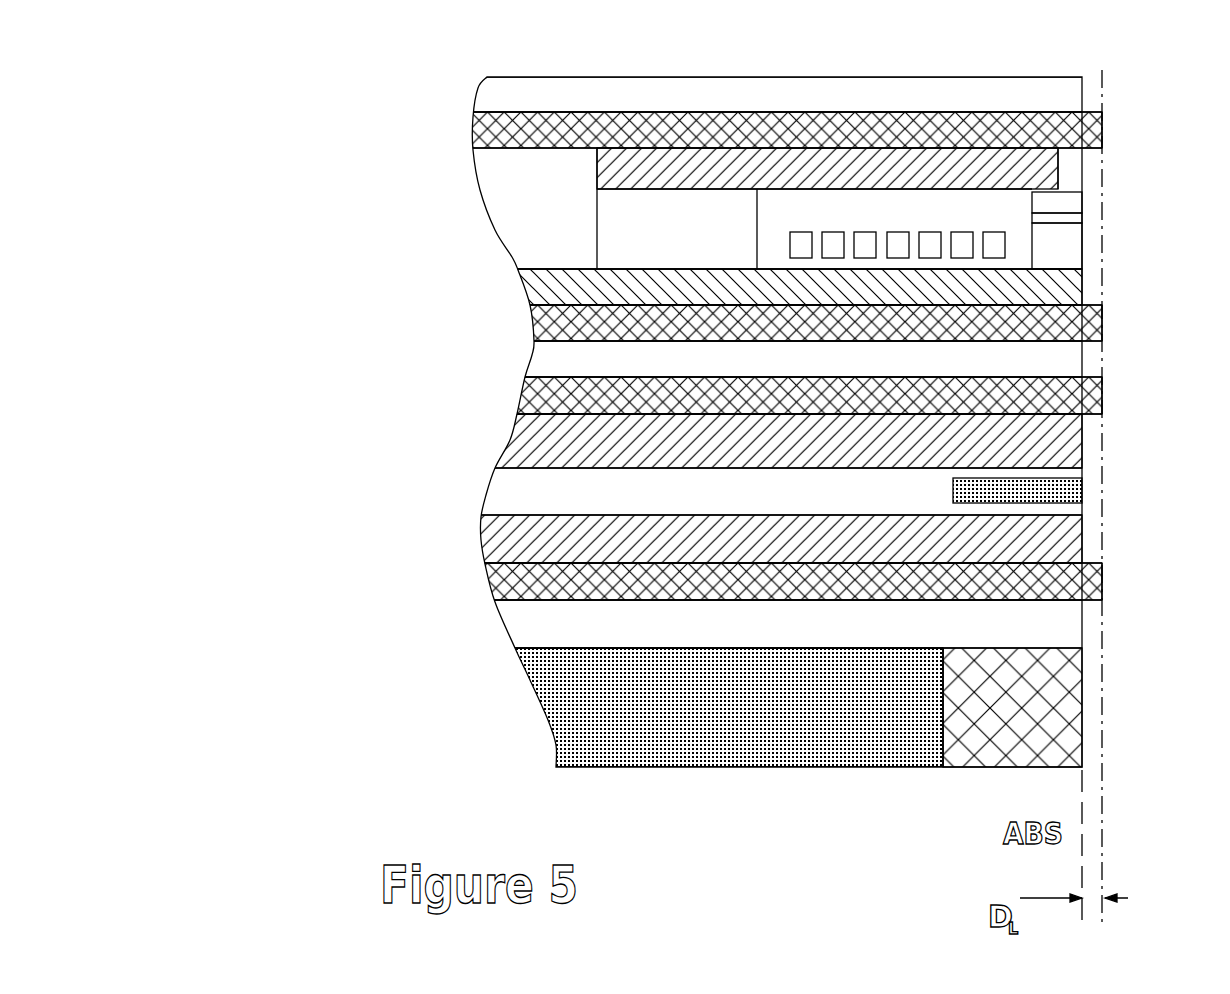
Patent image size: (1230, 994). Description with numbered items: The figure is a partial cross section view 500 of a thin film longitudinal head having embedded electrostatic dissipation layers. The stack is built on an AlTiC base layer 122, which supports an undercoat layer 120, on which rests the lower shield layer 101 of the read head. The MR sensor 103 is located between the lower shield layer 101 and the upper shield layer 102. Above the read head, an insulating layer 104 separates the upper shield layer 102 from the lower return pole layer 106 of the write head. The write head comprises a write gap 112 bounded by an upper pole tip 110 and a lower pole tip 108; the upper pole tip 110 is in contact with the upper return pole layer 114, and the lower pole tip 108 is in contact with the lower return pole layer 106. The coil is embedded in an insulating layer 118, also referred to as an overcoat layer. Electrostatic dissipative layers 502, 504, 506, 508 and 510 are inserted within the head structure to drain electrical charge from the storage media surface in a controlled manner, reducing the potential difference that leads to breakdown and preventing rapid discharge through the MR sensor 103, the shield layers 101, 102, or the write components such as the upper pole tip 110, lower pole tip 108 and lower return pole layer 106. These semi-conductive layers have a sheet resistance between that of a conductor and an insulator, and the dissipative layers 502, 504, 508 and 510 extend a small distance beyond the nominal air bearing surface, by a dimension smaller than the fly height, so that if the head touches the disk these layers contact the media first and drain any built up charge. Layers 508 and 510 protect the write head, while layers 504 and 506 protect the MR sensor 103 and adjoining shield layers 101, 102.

The partial cross section view 500 is at (370, 228).
The insulating layer 118 is at (503, 78).
The electrostatic dissipative layer 510 is at (1100, 127).
The upper return pole layer 114 is at (876, 187).
The upper pole tip 110 is at (1082, 198).
The write gap 112 is at (1082, 220).
The lower pole tip 108 is at (1082, 250).
The lower return pole layer 106 is at (523, 290).
The electrostatic dissipative layer 508 is at (1102, 318).
The insulating layer 104 is at (532, 357).
The electrostatic dissipative layer 506 is at (1102, 390).
The upper shield layer 102 is at (510, 441).
The MR sensor 103 is at (952, 492).
The lower shield layer 101 is at (480, 545).
The electrostatic dissipative layer 504 is at (1102, 577).
The undercoat layer 120 is at (500, 628).
The AlTiC base layer 122 is at (761, 748).
The electrostatic dissipative layer 502 is at (1043, 727).